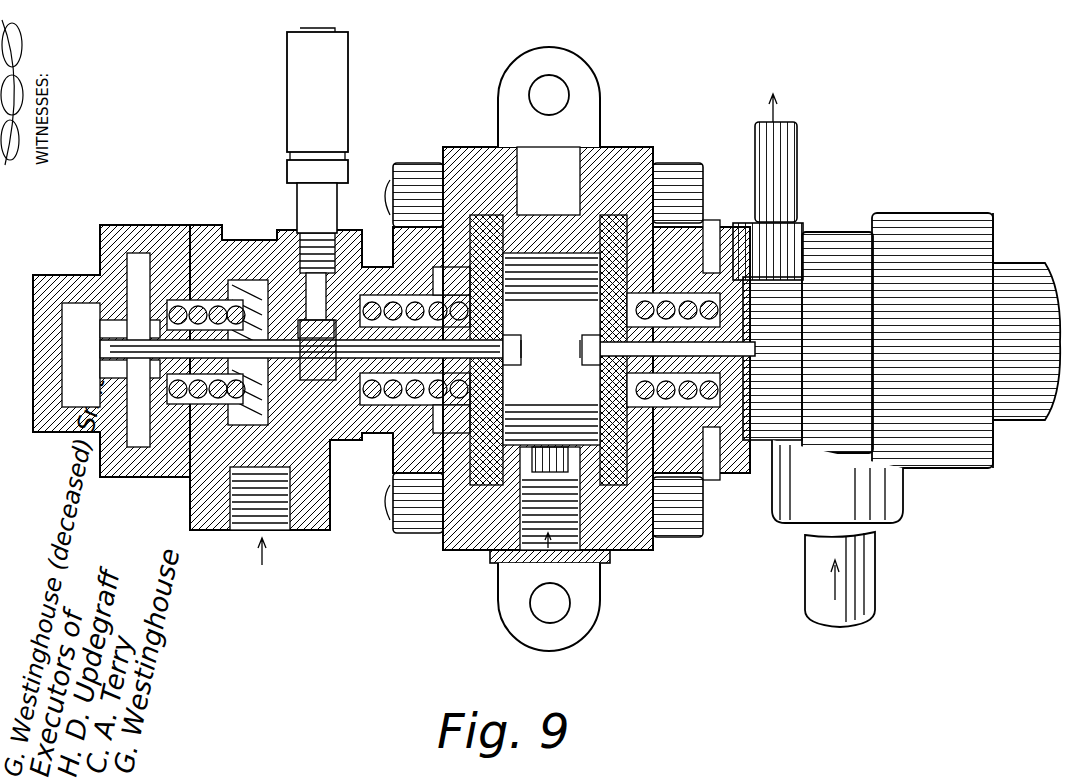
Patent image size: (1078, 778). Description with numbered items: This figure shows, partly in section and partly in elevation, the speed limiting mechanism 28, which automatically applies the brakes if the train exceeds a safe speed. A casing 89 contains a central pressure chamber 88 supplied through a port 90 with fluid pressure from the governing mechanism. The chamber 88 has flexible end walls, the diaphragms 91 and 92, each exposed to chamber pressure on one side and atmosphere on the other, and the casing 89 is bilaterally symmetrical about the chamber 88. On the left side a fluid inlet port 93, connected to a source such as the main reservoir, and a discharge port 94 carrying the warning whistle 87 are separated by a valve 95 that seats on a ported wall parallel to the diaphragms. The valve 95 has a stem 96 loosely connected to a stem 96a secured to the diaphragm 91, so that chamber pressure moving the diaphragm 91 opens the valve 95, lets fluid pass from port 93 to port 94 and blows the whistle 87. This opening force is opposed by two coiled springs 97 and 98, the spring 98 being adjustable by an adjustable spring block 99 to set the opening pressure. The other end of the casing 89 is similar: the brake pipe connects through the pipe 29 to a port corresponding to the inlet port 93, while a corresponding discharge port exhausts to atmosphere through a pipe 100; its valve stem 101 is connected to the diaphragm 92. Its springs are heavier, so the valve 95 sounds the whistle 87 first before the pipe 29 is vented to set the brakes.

The speed limiting mechanism 28 is at (405, 160).
The pipe 29 is at (870, 562).
The warning whistle 87 is at (287, 135).
The central pressure chamber 88 is at (551, 350).
The casing 89 is at (732, 349).
The port 90 is at (492, 563).
The diaphragm 91 is at (504, 310).
The diaphragm 92 is at (600, 390).
The fluid inlet port 93 is at (303, 377).
The discharge port 94 is at (285, 232).
The valve 95 is at (252, 385).
The stem 96 is at (318, 380).
The stem 96a is at (301, 346).
The coiled spring 97 is at (415, 350).
The coiled spring 98 is at (150, 405).
The adjustable spring block 99 is at (127, 370).
The pipe 100 is at (800, 142).
The valve stem 101 is at (677, 343).